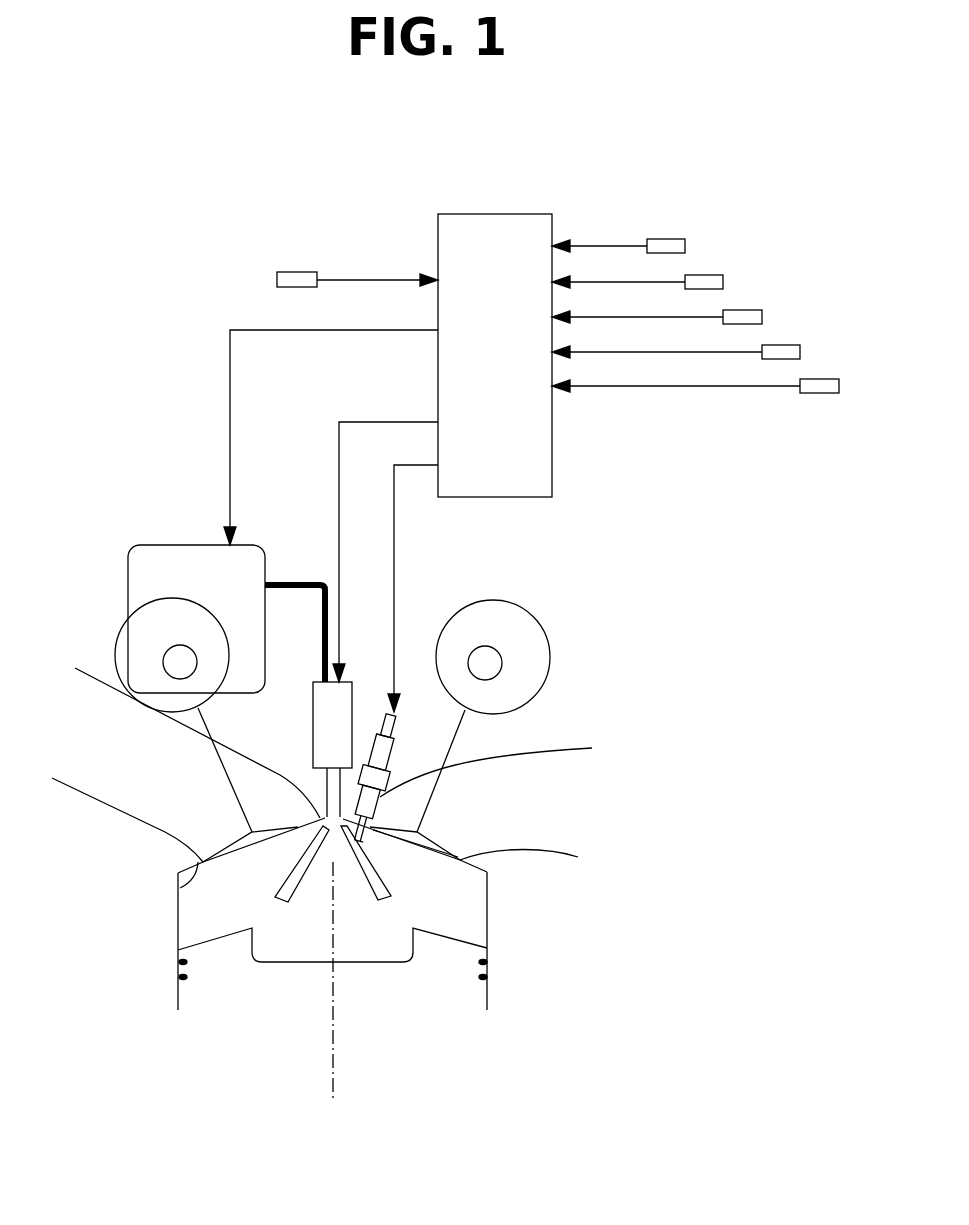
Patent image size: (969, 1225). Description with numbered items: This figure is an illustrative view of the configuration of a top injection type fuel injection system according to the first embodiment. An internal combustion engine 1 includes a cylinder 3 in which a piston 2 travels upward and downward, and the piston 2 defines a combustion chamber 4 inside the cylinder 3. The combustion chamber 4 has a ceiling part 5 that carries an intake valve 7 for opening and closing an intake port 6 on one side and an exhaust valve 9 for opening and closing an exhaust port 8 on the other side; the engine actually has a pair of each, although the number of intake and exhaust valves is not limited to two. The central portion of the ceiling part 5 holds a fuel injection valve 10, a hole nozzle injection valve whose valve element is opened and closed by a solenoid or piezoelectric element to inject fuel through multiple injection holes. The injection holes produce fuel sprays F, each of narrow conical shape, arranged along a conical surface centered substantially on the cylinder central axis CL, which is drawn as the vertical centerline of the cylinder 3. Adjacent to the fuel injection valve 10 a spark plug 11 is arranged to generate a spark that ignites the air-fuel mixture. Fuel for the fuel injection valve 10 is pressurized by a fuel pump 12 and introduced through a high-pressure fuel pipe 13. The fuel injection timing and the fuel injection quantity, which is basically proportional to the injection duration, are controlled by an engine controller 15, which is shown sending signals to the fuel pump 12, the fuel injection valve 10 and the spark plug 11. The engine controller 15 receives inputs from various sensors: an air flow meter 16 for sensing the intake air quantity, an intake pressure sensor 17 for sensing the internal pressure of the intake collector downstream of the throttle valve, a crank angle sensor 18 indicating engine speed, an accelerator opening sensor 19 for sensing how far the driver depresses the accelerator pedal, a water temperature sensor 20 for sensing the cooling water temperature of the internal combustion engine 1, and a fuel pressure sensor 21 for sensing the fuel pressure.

The internal combustion engine 1 is at (331, 775).
The piston 2 is at (210, 988).
The cylinder 3 is at (186, 918).
The combustion chamber 4 is at (487, 910).
The ceiling part 5 is at (178, 886).
The intake port 6 is at (97, 790).
The intake valve 7 is at (235, 838).
The exhaust port 8 is at (528, 765).
The exhaust valve 9 is at (437, 847).
The fuel injection valve 10 is at (353, 705).
The spark plug 11 is at (400, 712).
The fuel pump 12 is at (162, 545).
The high-pressure fuel pipe 13 is at (282, 590).
The engine controller 15 is at (494, 225).
The air flow meter 16 is at (297, 270).
The intake pressure sensor 17 is at (665, 240).
The crank angle sensor 18 is at (705, 275).
The accelerator opening sensor 19 is at (742, 310).
The water temperature sensor 20 is at (780, 345).
The fuel pressure sensor 21 is at (818, 379).
The fuel spray F is at (385, 880).
The cylinder central axis CL is at (333, 995).